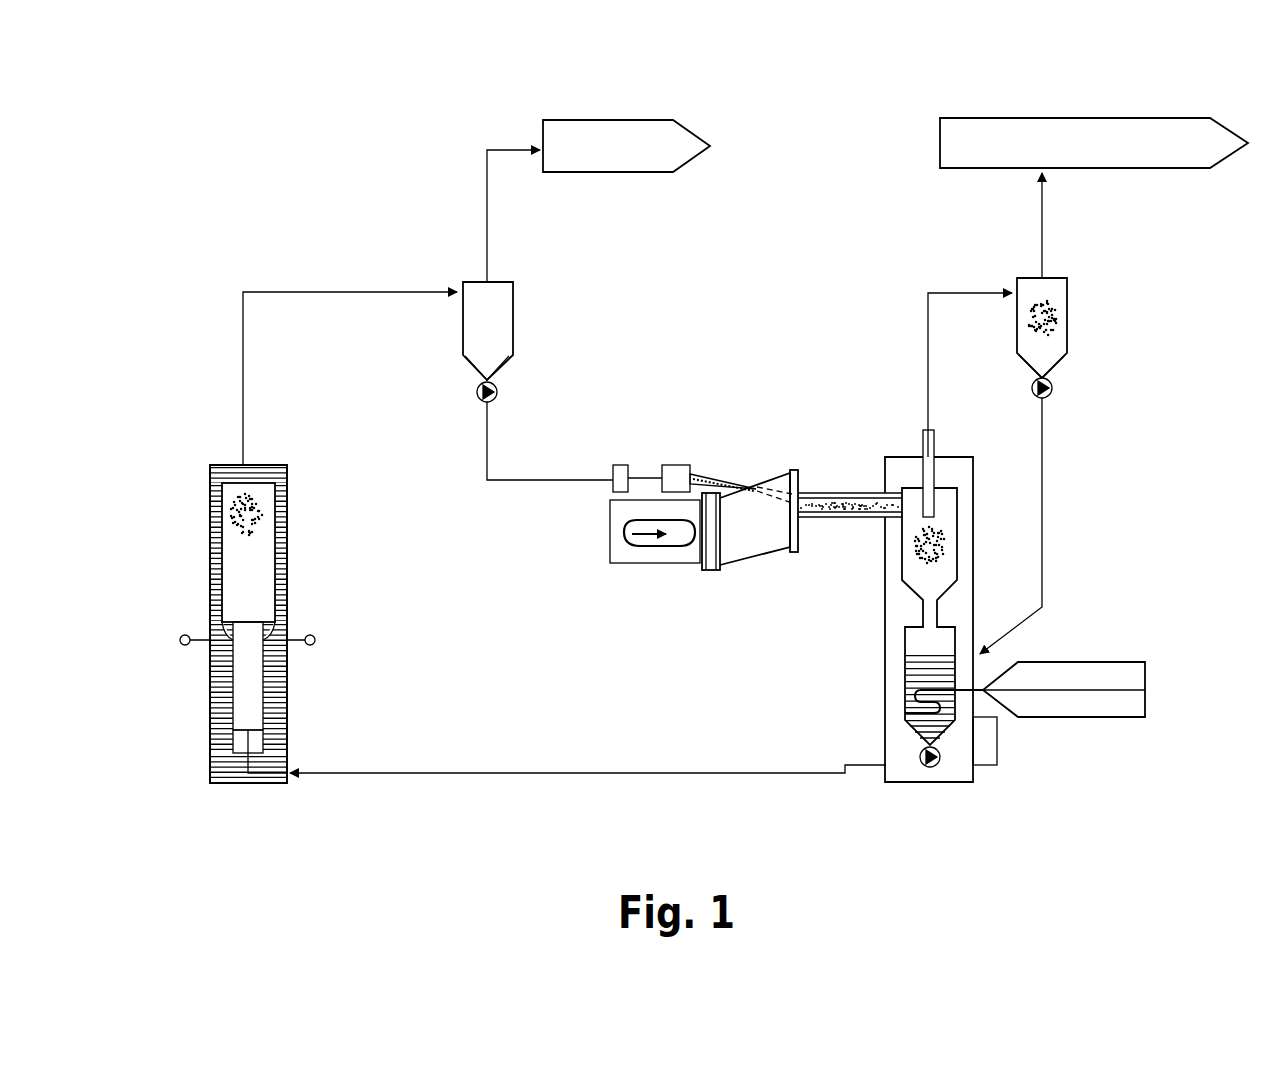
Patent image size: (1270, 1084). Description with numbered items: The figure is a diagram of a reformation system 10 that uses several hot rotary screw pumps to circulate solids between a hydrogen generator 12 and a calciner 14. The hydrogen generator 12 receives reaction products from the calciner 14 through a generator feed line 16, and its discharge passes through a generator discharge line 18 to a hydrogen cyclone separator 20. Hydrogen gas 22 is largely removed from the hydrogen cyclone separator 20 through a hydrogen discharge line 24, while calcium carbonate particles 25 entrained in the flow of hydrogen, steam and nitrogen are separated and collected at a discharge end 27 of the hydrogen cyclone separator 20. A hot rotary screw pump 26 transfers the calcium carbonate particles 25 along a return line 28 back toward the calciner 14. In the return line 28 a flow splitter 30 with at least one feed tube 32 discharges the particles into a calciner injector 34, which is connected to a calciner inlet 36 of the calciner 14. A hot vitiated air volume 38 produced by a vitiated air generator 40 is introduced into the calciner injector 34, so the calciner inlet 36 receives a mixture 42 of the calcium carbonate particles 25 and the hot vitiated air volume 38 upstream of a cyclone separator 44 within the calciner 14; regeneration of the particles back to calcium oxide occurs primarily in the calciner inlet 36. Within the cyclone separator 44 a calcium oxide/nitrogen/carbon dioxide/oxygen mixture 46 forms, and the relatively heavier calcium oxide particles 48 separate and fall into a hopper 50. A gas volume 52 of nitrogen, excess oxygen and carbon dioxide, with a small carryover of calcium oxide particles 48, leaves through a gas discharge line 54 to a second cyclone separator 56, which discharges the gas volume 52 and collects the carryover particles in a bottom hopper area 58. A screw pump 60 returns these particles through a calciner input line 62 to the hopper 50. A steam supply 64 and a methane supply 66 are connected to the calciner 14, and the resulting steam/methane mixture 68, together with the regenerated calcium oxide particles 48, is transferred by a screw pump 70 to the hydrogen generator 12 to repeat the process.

The reformation system 10 is at (295, 173).
The hydrogen generator 12 is at (289, 578).
The calciner 14 is at (885, 733).
The generator feed line 16 is at (555, 770).
The generator discharge line 18 is at (331, 290).
The hydrogen cyclone separator 20 is at (515, 300).
The hydrogen gas 22 is at (623, 118).
The hydrogen discharge line 24 is at (490, 249).
The calcium carbonate particles 25 is at (238, 517).
The hot rotary screw pump 26 is at (500, 386).
The discharge end 27 is at (466, 364).
The return line 28 is at (485, 464).
The flow splitter 30 is at (645, 472).
The feed tube 32 is at (707, 476).
The calciner injector 34 is at (760, 540).
The calciner inlet 36 is at (828, 490).
The hot vitiated air volume 38 is at (633, 546).
The vitiated air generator 40 is at (664, 566).
The mixture 42 is at (858, 503).
The cyclone separator 44 is at (900, 550).
The calcium oxide/nitrogen/carbon dioxide/oxygen mixture 46 is at (945, 546).
The calcium oxide particles 48 is at (1053, 322).
The hopper 50 is at (906, 681).
The gas volume 52 is at (1033, 118).
The gas discharge line 54 is at (950, 293).
The cyclone separator 56 is at (1068, 290).
The bottom hopper area 58 is at (1020, 360).
The screw pump 60 is at (1055, 388).
The calciner input line 62 is at (1050, 546).
The steam supply 64 is at (1070, 660).
The methane supply 66 is at (1120, 718).
The steam/methane mixture 68 is at (983, 690).
The screw pump 70 is at (943, 763).